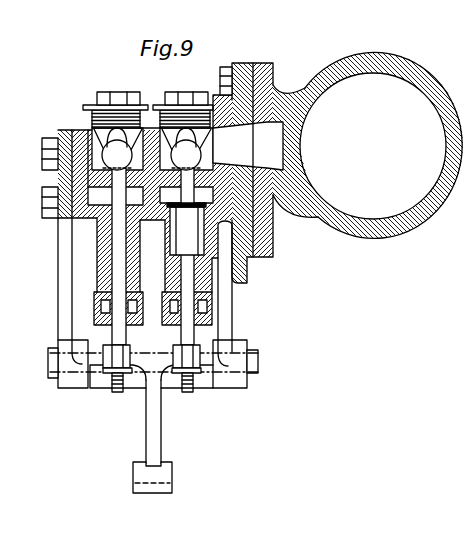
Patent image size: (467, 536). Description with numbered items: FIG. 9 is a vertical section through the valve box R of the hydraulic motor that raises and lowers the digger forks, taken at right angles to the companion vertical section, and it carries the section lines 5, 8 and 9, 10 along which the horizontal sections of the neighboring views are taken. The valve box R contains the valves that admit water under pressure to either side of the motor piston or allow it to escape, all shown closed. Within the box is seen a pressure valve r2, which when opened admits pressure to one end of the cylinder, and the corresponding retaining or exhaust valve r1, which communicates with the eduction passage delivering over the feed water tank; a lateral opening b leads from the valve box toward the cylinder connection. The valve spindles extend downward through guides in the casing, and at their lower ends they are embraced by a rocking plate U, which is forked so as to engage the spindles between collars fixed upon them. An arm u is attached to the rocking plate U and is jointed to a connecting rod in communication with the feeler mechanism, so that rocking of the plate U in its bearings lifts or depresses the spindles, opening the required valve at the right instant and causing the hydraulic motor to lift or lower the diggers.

The section line 5, 6 5 is at (58, 133).
The section line 7 8 is at (0, 195).
The valve box R is at (73, 219).
The section line 9, 10 9 is at (72, 333).
The section line 9 10 is at (207, 335).
The rocking plate U is at (148, 363).
The arm u is at (160, 430).
The passage b is at (268, 133).
The pressure valve r2 is at (118, 149).
The retaining or exhaust valve r1 is at (205, 204).